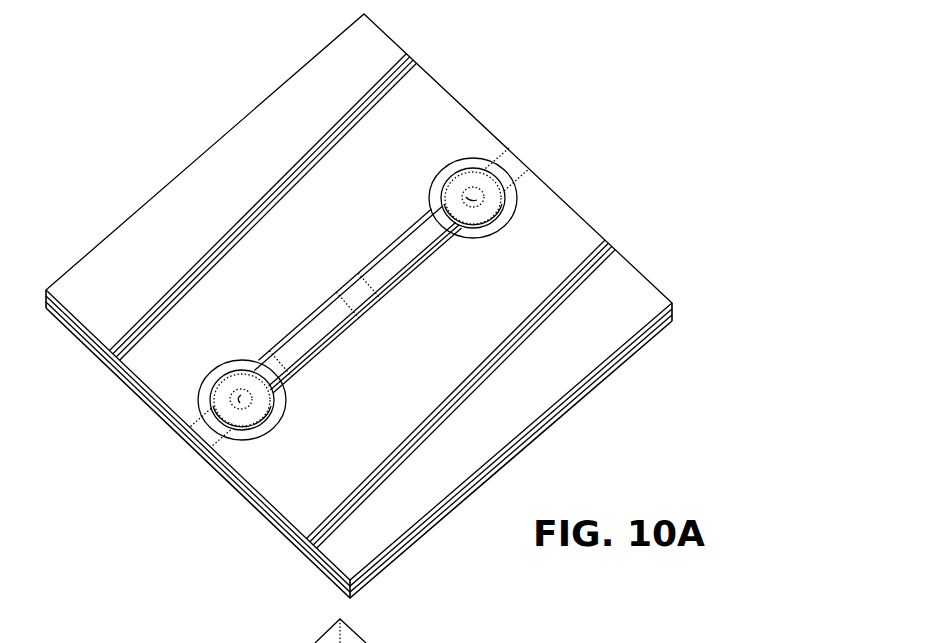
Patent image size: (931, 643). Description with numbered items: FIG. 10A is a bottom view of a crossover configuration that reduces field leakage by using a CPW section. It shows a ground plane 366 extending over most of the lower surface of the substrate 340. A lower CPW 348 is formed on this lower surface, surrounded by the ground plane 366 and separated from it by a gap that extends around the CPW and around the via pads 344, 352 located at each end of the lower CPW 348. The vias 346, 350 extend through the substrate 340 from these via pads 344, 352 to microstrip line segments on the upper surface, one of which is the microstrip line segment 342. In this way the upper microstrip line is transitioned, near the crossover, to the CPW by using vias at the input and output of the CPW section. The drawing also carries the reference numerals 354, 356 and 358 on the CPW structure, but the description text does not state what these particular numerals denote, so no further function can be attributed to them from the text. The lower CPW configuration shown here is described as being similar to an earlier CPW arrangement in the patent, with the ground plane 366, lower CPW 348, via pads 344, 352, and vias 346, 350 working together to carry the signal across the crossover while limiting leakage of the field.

The substrate 340 is at (197, 173).
The microstrip line segment 342 is at (210, 419).
The via pad 344 is at (228, 412).
The via 346 is at (240, 403).
The lower CPW 348 is at (322, 338).
The via 350 is at (579, 180).
The via pad 352 is at (500, 173).
The arm side wall 354 is at (373, 310).
The arm top edge 356 is at (288, 330).
The arm outer edge 358 is at (398, 245).
The ground plane 366 is at (636, 320).